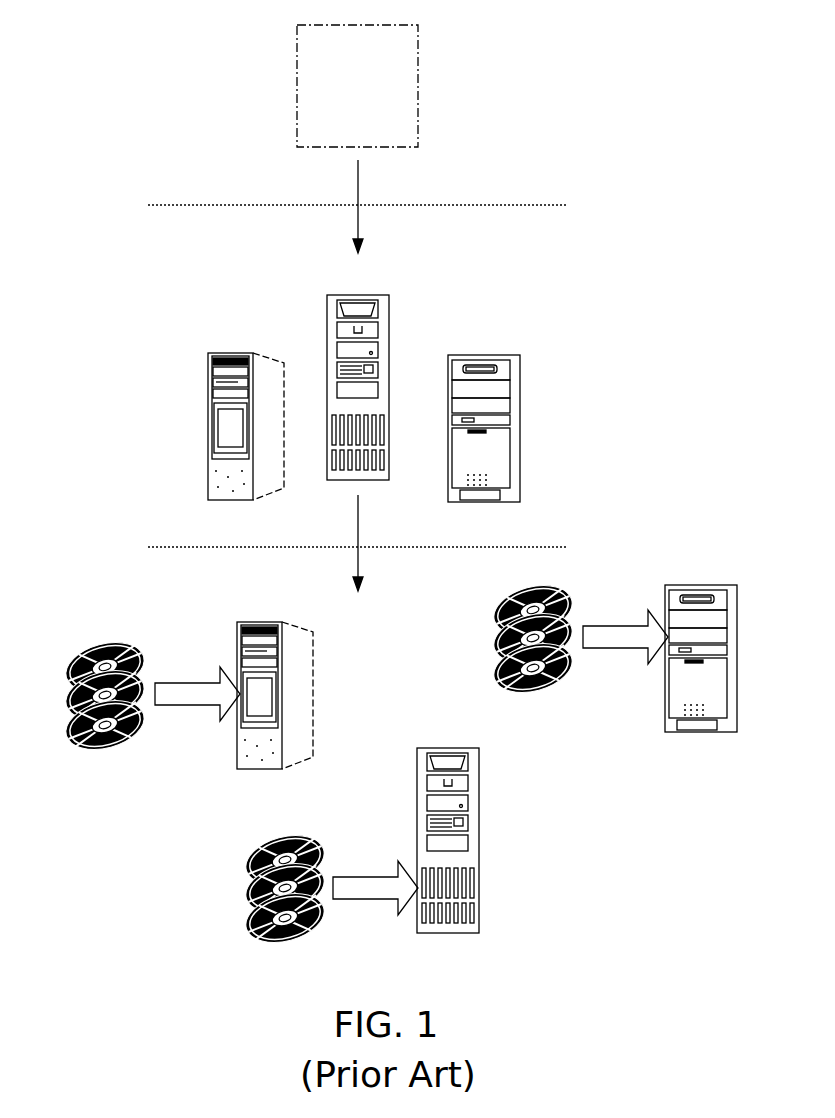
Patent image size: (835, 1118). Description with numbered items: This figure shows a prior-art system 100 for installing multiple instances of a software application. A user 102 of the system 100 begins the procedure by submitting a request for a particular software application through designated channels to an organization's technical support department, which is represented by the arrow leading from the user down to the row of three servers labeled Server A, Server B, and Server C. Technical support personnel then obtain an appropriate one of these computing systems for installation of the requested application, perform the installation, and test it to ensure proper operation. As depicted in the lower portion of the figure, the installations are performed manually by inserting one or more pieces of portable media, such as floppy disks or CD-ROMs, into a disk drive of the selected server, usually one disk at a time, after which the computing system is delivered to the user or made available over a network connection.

The system 100 is at (633, 84).
The user 102 is at (418, 88).